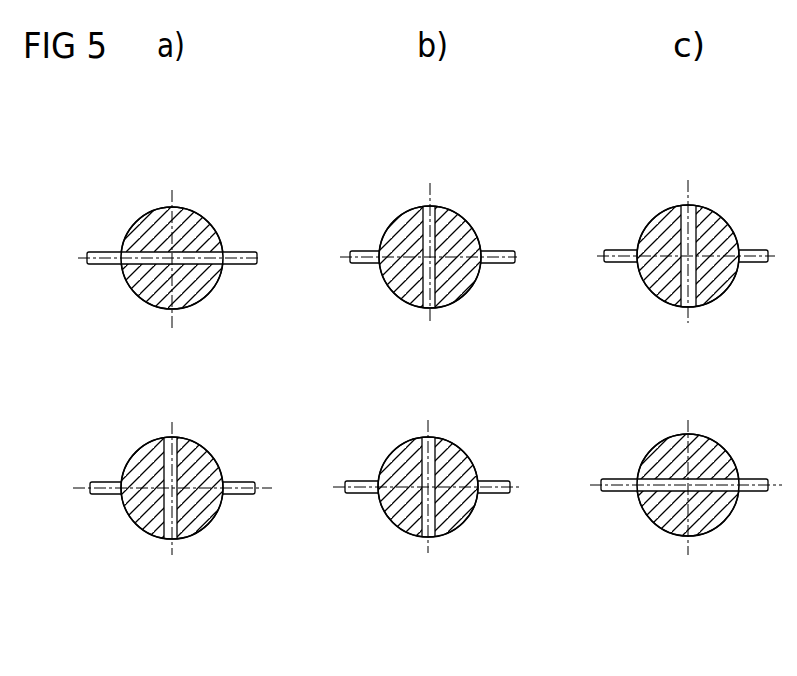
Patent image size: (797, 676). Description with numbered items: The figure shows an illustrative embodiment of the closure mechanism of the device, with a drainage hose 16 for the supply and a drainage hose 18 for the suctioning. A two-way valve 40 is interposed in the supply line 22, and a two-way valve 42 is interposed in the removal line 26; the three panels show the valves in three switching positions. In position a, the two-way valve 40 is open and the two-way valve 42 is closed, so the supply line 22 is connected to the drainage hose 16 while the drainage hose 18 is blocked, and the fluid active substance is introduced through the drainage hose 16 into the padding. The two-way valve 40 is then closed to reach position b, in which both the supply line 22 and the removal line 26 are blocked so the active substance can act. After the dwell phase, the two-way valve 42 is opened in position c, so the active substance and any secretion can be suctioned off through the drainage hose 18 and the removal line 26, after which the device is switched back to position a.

The drainage hose 16 is at (758, 245).
The drainage hose 18 is at (757, 593).
The supply line 22 is at (618, 245).
The removal line 26 is at (617, 595).
The two-way valve 40 is at (715, 207).
The two-way valve 42 is at (704, 595).